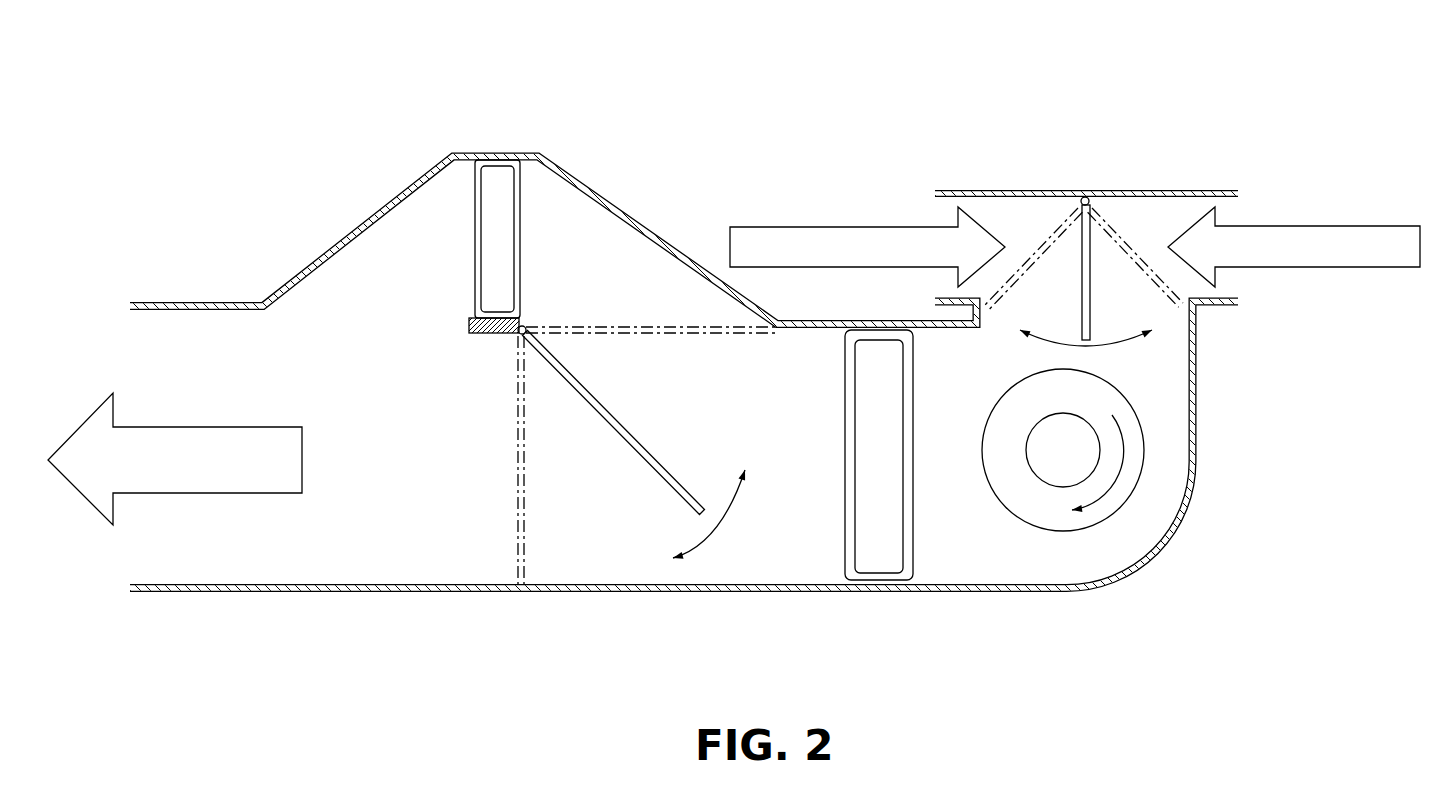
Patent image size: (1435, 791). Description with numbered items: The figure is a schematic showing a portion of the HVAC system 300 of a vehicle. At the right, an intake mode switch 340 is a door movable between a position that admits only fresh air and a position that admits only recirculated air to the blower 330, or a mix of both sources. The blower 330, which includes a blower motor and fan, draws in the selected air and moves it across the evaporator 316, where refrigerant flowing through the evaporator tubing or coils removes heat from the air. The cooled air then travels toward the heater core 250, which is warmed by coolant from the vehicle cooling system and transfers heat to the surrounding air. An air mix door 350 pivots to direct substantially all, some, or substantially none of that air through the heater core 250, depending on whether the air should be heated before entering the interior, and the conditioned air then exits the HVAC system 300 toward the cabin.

The HVAC system 300 is at (262, 190).
The heater core 250 is at (490, 207).
The air mix door 350 is at (582, 380).
The intake mode switch 340 is at (1090, 253).
The evaporator 316 is at (877, 557).
The blower 330 is at (1073, 530).